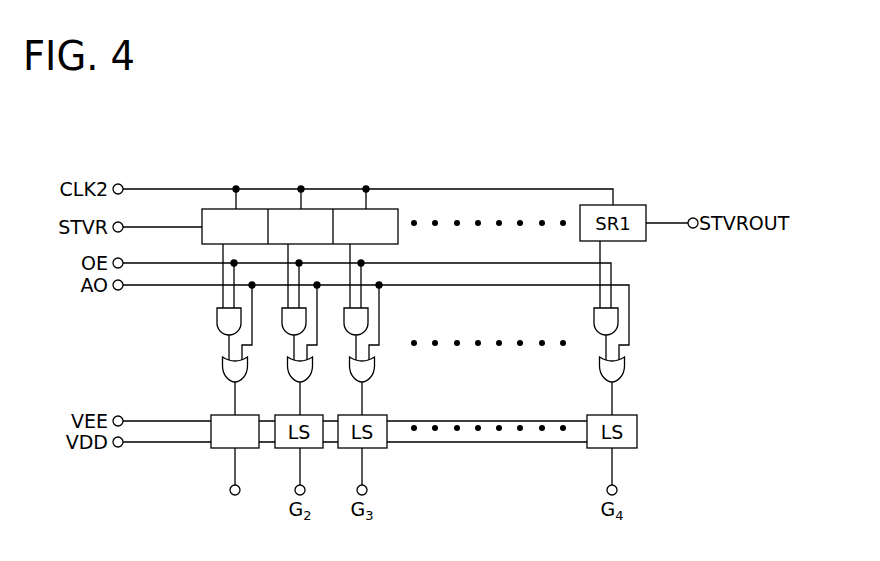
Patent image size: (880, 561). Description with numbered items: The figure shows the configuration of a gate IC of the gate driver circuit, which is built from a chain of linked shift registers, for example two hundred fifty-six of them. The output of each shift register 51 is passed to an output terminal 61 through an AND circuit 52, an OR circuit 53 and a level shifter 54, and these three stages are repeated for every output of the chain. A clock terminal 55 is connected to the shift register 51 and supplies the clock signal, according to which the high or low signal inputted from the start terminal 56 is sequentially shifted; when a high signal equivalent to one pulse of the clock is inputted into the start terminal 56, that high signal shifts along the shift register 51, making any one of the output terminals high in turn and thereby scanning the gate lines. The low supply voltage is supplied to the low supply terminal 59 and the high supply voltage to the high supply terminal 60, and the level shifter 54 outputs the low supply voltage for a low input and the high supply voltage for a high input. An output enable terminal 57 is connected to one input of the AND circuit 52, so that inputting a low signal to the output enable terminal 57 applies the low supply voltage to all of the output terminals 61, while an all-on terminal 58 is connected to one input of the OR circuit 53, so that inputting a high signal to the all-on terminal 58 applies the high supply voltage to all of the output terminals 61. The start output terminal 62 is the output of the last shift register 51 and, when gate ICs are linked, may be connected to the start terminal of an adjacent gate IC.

The shift register 51 is at (212, 209).
The AND circuit 52 is at (213, 334).
The OR circuit 53 is at (216, 386).
The level shifter 54 is at (222, 449).
The CLK2 terminal 55 is at (121, 185).
The STVR terminal 56 is at (121, 223).
The OE terminal 57 is at (121, 259).
The AO terminal 58 is at (120, 290).
The VEE terminal 59 is at (121, 416).
The VDD terminal 60 is at (120, 447).
The output terminal 61 is at (229, 491).
The STVROUT 62 is at (693, 217).